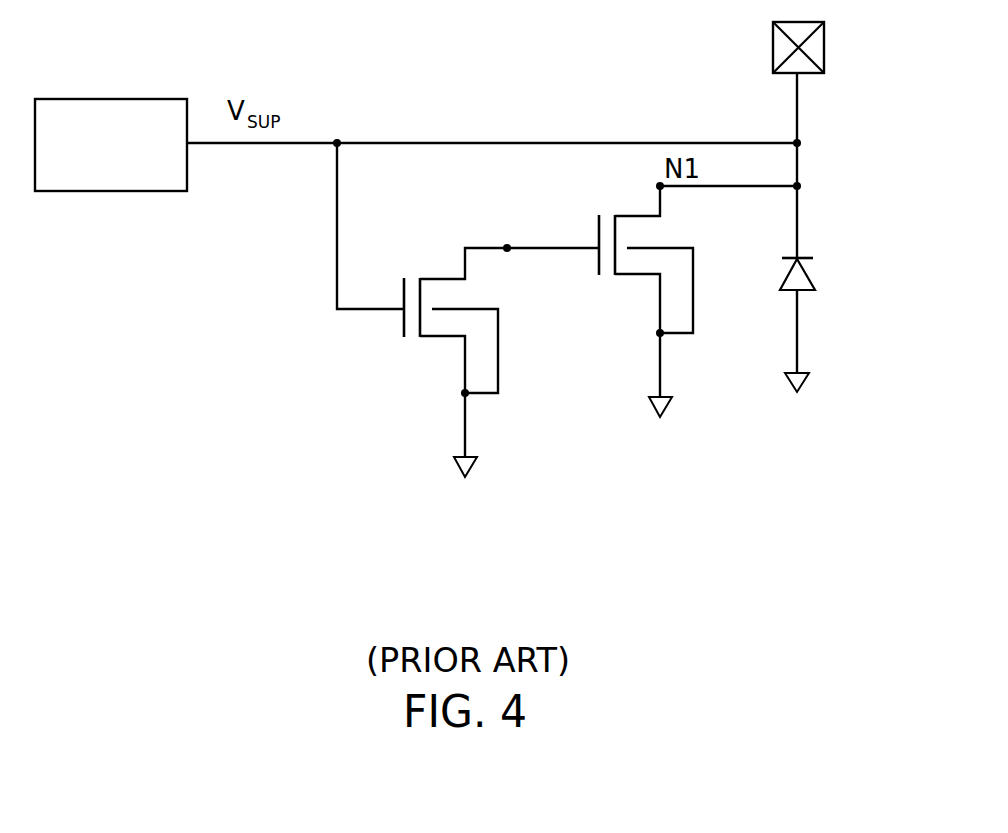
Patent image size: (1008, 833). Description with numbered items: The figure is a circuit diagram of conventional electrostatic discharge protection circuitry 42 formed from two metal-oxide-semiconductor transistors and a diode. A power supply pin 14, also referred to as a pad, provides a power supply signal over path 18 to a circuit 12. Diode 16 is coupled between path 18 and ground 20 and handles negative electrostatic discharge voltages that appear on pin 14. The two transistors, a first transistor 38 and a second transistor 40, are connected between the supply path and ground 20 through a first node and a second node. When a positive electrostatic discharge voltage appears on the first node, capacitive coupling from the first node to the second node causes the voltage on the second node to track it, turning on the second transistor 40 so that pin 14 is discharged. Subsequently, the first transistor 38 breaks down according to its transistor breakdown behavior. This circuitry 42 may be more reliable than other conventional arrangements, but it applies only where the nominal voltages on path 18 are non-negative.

The circuit 12 is at (108, 99).
The power supply pin 14 is at (824, 43).
The diode 16 is at (803, 272).
The path 18 is at (538, 143).
The ground 20 is at (472, 465).
The transistor T1 38 is at (406, 359).
The transistor T2 40 is at (601, 296).
The electrostatic discharge protection circuitry 42 is at (526, 363).